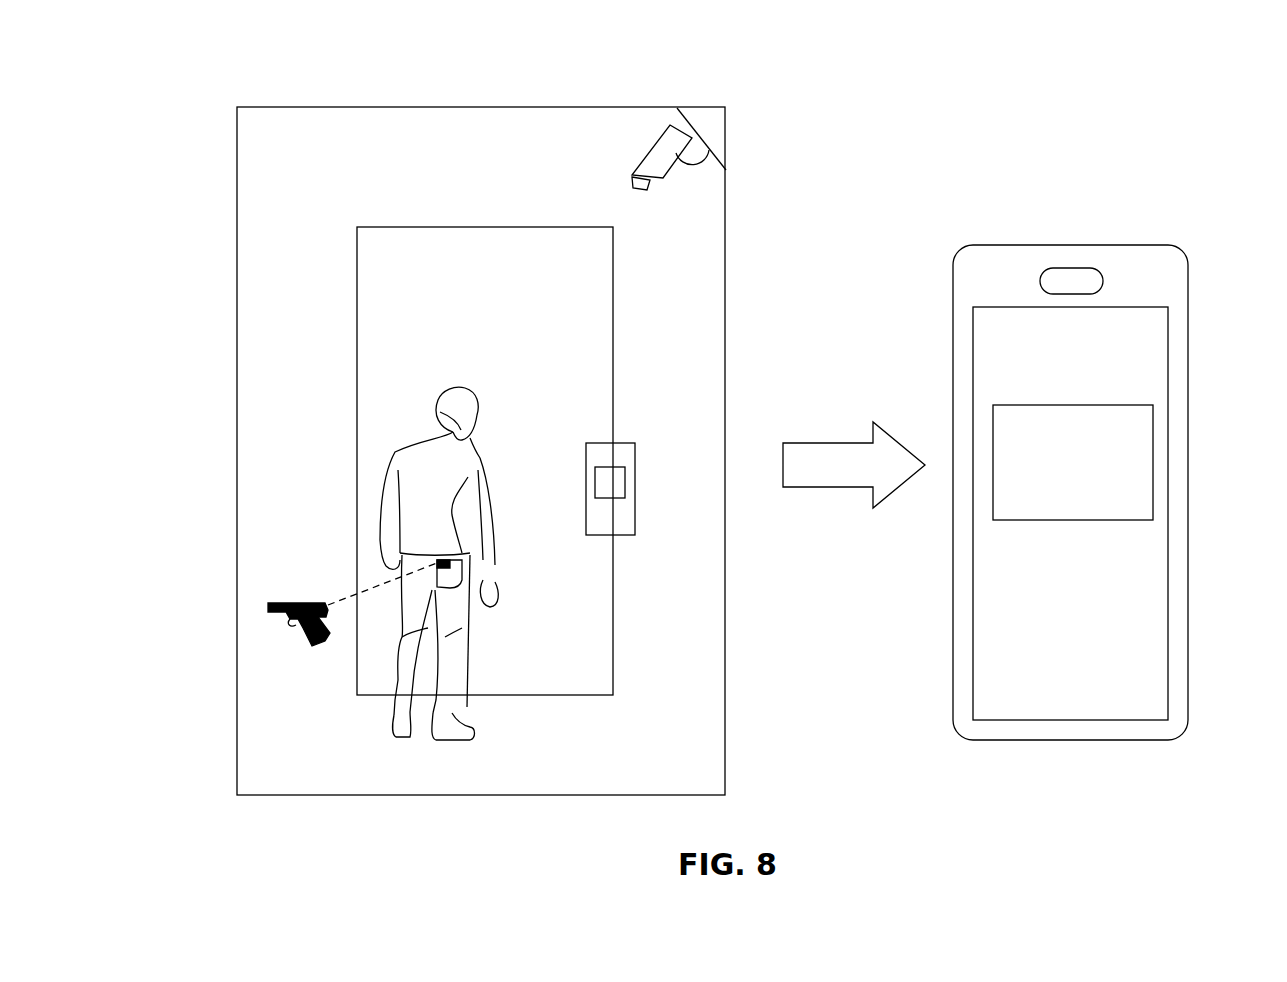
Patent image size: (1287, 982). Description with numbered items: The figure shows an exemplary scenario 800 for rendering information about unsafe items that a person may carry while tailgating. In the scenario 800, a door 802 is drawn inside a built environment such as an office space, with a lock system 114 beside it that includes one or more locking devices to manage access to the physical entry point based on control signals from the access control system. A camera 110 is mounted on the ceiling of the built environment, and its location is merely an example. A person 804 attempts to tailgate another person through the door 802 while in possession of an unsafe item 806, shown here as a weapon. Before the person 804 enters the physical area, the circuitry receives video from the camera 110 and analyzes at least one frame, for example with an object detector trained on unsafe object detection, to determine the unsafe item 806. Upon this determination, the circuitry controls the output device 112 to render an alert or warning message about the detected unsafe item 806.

The exemplary scenario 800 is at (198, 89).
The camera 110 is at (700, 138).
The output device 112 is at (1182, 252).
The lock system 114 is at (635, 488).
The door 802 is at (612, 605).
The person 804 is at (392, 463).
The unsafe item 806 is at (277, 603).